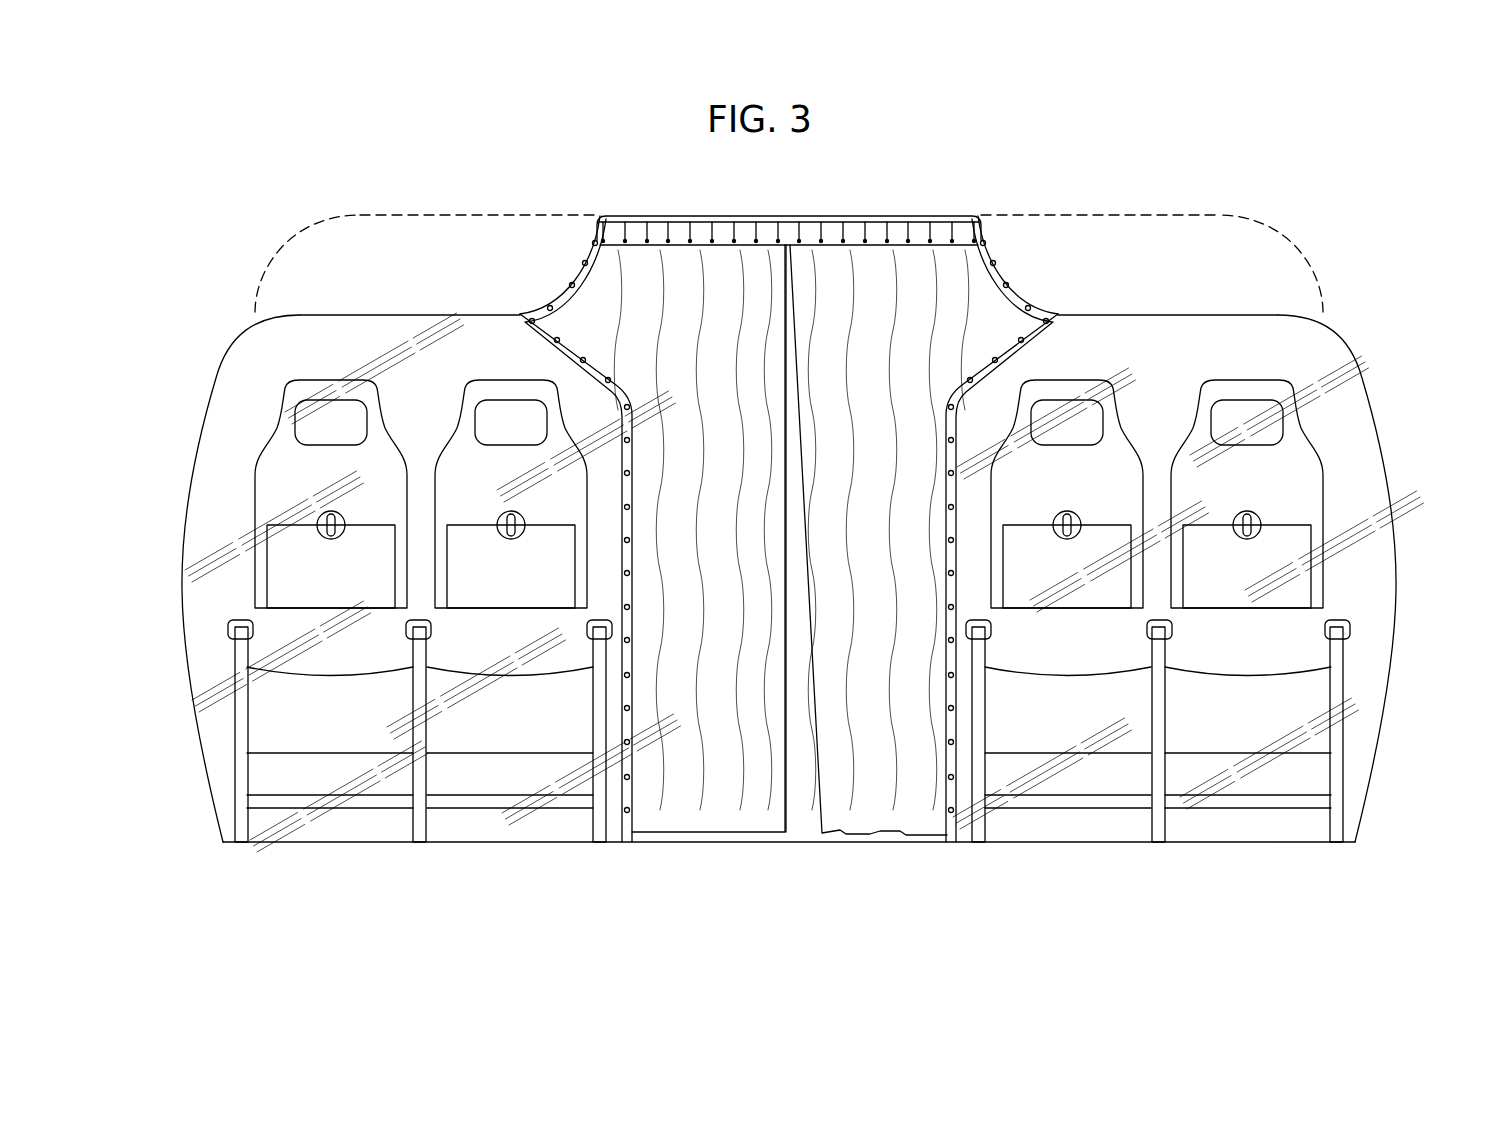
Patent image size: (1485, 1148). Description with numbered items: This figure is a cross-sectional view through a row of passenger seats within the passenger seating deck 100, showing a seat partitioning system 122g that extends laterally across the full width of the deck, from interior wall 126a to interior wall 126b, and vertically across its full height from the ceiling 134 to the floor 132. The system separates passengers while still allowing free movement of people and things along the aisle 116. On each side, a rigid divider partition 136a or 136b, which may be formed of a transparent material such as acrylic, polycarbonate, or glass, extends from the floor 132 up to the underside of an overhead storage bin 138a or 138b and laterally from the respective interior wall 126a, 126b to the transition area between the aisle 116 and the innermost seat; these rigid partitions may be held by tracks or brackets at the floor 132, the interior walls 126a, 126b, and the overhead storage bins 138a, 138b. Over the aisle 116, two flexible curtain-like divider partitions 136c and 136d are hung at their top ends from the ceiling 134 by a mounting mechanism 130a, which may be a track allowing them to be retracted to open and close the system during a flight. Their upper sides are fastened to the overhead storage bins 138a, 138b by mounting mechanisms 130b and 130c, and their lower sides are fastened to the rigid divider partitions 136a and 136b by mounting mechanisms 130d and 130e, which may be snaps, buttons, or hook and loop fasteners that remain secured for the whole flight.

The passenger seating deck 100 is at (985, 178).
The aisle 116 is at (802, 798).
The seat partitioning system 122g is at (1330, 268).
The interior wall 126a is at (184, 524).
The interior wall 126b is at (1389, 523).
The mounting mechanism 130a is at (835, 229).
The mounting mechanism 130b is at (559, 278).
The mounting mechanism 130c is at (1008, 274).
The mounting mechanism 130d is at (622, 662).
The mounting mechanism 130e is at (953, 695).
The floor 132 is at (800, 842).
The ceiling 134 is at (872, 205).
The divider partition 136a is at (438, 388).
The divider partition 136b is at (1228, 388).
The divider partition 136c is at (680, 346).
The divider partition 136d is at (947, 346).
The overhead storage bin 138a is at (423, 275).
The overhead storage bin 138b is at (1202, 275).